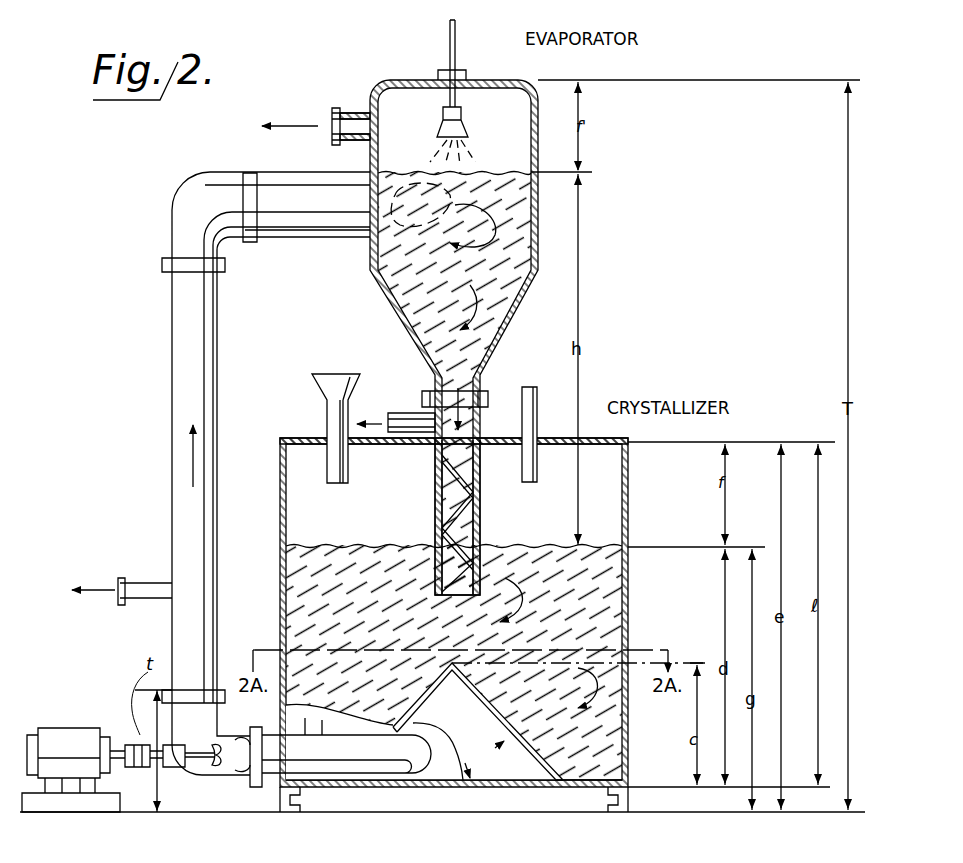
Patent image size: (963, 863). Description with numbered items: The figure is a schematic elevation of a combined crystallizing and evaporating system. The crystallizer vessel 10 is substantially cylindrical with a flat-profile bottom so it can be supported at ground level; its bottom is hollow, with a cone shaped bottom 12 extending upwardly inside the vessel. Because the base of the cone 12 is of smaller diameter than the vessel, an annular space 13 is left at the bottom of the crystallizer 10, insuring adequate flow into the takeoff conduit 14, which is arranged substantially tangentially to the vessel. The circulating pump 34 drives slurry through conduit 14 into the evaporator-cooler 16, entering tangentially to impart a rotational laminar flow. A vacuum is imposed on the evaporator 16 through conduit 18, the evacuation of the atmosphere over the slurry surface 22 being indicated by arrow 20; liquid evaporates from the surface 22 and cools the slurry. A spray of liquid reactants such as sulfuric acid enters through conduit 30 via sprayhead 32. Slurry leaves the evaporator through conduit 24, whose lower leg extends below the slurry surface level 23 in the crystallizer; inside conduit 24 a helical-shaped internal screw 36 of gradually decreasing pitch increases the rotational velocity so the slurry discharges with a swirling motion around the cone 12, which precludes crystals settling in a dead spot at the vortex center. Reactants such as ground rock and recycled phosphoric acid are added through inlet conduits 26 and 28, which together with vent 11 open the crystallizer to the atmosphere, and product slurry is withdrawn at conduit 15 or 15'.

The crystallizer vessel 10 is at (433, 625).
The vent 11 is at (600, 452).
The cone shaped bottom 12 is at (500, 744).
The annular space 13 is at (585, 775).
The takeoff conduit 14 is at (172, 458).
The product conduit 15 is at (122, 573).
The product conduit 15' is at (396, 402).
The evaporator-cooler 16 is at (427, 332).
The conduit 18 is at (352, 112).
The arrow 20 is at (296, 118).
The slurry surface 22 is at (515, 172).
The slurry surface level 23 is at (355, 545).
The conduit 24 is at (436, 450).
The inlet conduit 26 is at (313, 384).
The inlet conduit 28 is at (538, 405).
The conduit 30 is at (450, 32).
The sprayhead 32 is at (441, 130).
The circulating pump 34 is at (80, 728).
The helical-shaped internal screw 36 is at (468, 480).